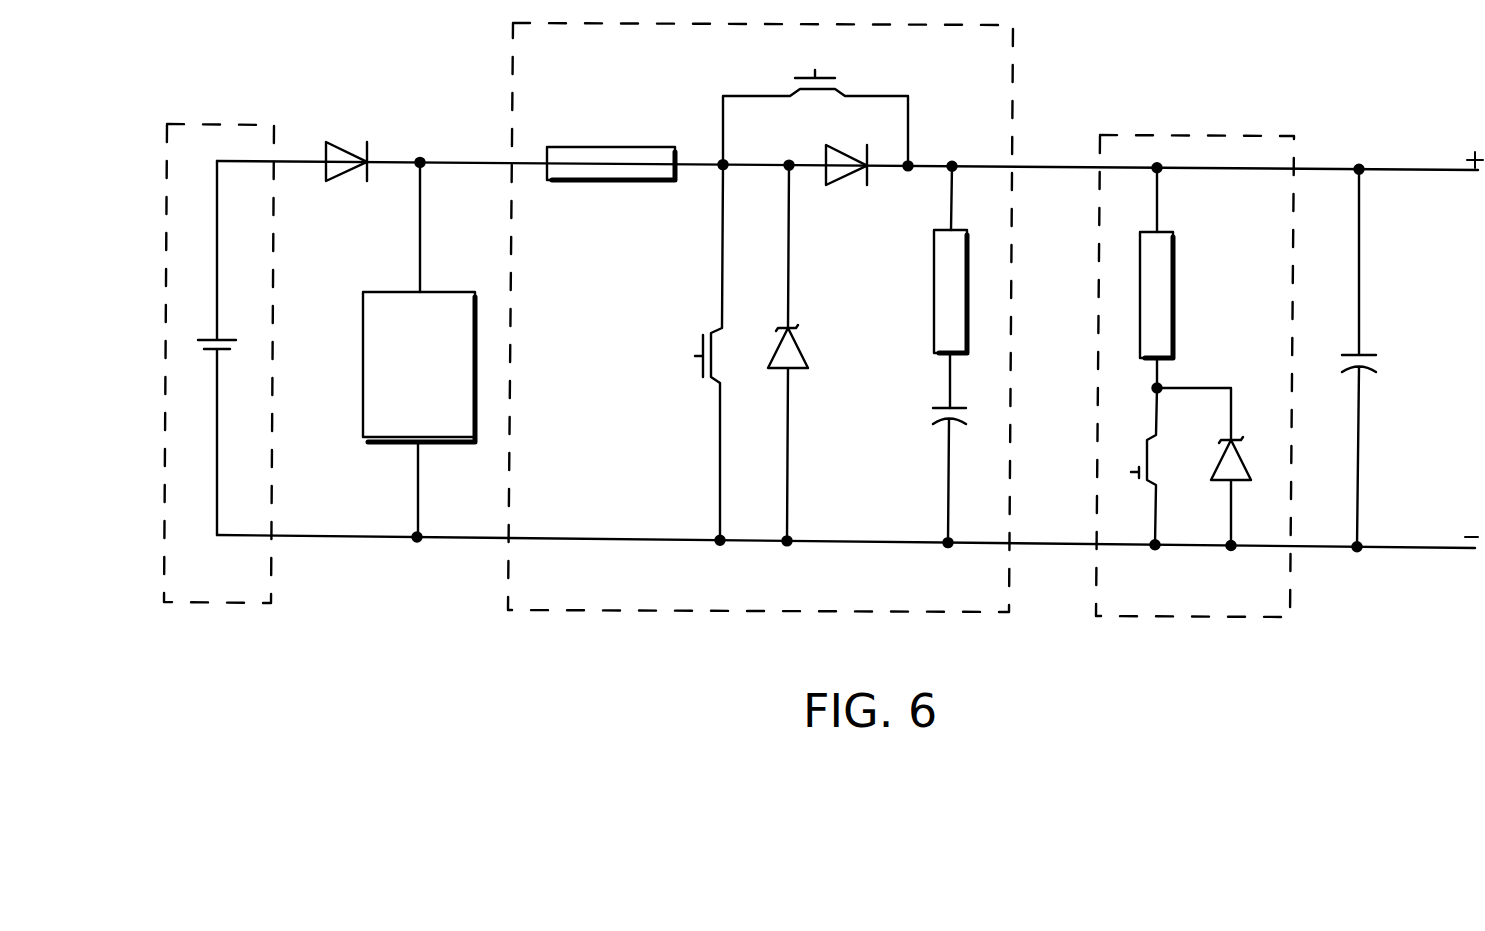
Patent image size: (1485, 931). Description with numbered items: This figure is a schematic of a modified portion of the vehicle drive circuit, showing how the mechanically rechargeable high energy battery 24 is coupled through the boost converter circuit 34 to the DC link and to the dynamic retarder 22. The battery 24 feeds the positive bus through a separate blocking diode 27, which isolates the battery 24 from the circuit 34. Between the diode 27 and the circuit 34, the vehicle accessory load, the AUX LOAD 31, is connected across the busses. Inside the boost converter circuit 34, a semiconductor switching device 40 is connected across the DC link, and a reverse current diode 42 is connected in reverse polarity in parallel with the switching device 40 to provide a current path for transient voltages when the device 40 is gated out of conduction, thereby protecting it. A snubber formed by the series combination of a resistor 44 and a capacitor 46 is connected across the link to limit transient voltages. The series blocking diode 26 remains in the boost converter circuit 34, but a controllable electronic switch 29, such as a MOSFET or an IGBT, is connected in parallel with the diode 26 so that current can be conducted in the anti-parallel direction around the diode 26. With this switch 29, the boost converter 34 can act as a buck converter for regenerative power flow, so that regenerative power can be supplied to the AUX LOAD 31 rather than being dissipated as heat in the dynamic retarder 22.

The dynamic retarder 22 is at (1182, 597).
The mechanically rechargeable high energy battery 24 is at (207, 583).
The blocking diode 26 is at (850, 178).
The blocking diode 27 is at (346, 152).
The controllable electronic switch 29 is at (845, 93).
The AUX LOAD 31 is at (404, 403).
The boost converter circuit 34 is at (770, 590).
The semiconductor switching device 40 is at (712, 382).
The reverse current diode 42 is at (797, 358).
The resistor 44 is at (933, 282).
The capacitor 46 is at (946, 406).